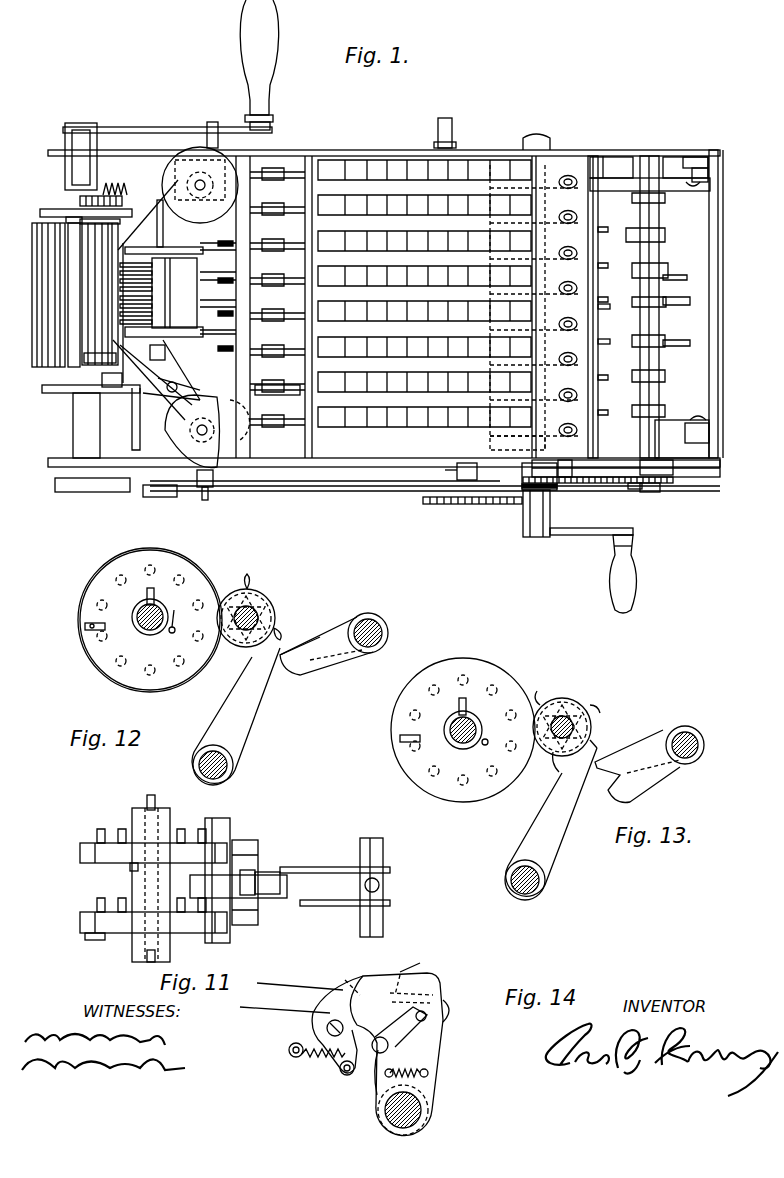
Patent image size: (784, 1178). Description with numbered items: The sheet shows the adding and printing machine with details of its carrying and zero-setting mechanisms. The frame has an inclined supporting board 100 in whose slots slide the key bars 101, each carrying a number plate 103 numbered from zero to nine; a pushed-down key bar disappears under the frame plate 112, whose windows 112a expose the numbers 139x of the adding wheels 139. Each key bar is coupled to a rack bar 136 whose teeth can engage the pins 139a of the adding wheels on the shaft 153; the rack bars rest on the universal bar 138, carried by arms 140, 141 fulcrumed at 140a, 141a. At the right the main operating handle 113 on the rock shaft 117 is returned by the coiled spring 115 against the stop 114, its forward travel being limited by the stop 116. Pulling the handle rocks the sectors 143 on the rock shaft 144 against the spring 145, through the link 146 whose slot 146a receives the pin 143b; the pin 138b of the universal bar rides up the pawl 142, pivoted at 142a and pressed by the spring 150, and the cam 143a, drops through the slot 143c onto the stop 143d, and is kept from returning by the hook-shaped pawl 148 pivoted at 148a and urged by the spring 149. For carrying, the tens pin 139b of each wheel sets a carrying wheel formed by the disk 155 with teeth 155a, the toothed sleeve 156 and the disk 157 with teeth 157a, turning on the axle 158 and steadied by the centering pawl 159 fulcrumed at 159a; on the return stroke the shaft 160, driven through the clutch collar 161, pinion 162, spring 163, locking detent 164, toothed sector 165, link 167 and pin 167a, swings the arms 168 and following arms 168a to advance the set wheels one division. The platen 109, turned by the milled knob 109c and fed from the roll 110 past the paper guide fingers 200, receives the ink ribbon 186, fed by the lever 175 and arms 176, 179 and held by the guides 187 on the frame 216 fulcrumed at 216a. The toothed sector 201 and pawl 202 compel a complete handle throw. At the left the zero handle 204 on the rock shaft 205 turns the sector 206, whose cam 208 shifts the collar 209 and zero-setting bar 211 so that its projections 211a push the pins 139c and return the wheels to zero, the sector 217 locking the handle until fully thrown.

In FIG. 1, the supporting board 100 is at (350, 307).
In FIG. 1, the key bar 101 is at (320, 160).
In FIG. 1, the number plate 103 is at (352, 160).
In FIG. 1, the platen 109 is at (90, 228).
In FIG. 1, the milled knob 109c is at (76, 204).
In FIG. 1, the paper roll 110 is at (40, 323).
In FIG. 1, the frame plate 112 is at (540, 157).
In FIG. 1, the windows 112a is at (492, 438).
In FIG. 1, the main operating handle 113 is at (274, 126).
In FIG. 1, the stop 114 is at (208, 122).
In FIG. 1, the coiled spring 115 is at (115, 167).
In FIG. 1, the stop 116 is at (452, 124).
In FIG. 1, the rock shaft 117 is at (73, 428).
In FIG. 1, the rack bar 136 is at (292, 390).
In FIG. 12, the universal bar 138 is at (90, 582).
In FIG. 14, the transverse pin 138b is at (427, 1012).
In FIG. 12, the adding wheel 139 is at (135, 685).
In FIG. 13, the adding wheel 139 is at (450, 665).
In FIG. 11, the adding wheel 139 is at (80, 860).
In FIG. 12, the pins 139a is at (118, 664).
In FIG. 13, the pins 139a is at (462, 785).
In FIG. 11, the pins 139a is at (97, 835).
In FIG. 12, the tens pin 139b is at (85, 628).
In FIG. 13, the tens pin 139b is at (410, 738).
In FIG. 11, the tens pin 139b is at (85, 938).
In FIG. 12, the pin 139c is at (187, 609).
In FIG. 13, the pin 139c is at (412, 740).
In FIG. 11, the pin 139c is at (130, 868).
In FIG. 1, the numbers 139x is at (570, 180).
In FIG. 1, the arm 140 is at (670, 170).
In FIG. 1, the fulcrum 140a is at (700, 186).
In FIG. 1, the arm 141 is at (673, 425).
In FIG. 1, the fulcrum 141a is at (703, 420).
In FIG. 14, the pawl 142 is at (405, 1035).
In FIG. 14, the fulcrum 142a is at (377, 1045).
In FIG. 14, the sector 143 is at (443, 1035).
In FIG. 14, the cam 143a is at (441, 990).
In FIG. 14, the transverse pin 143b is at (355, 974).
In FIG. 14, the slot 143c is at (396, 972).
In FIG. 14, the stop 143d is at (345, 1075).
In FIG. 14, the rock shaft 144 is at (422, 1116).
In FIG. 1, the spring 145 is at (122, 184).
In FIG. 14, the link 146 is at (287, 990).
In FIG. 14, the longitudinal slot 146a is at (412, 965).
In FIG. 14, the hook-shaped pawl 148 is at (313, 1020).
In FIG. 14, the pivot 148a is at (289, 1051).
In FIG. 14, the spring 149 is at (315, 1060).
In FIG. 14, the spring 150 is at (430, 1078).
In FIG. 12, the shaft 153 is at (146, 630).
In FIG. 13, the shaft 153 is at (460, 742).
In FIG. 11, the shaft 153 is at (133, 810).
In FIG. 1, the disk 155 is at (605, 345).
In FIG. 11, the disk 155 is at (262, 868).
In FIG. 13, the teeth 155a is at (565, 700).
In FIG. 1, the toothed sleeve 156 is at (600, 312).
In FIG. 12, the toothed sleeve 156 is at (262, 626).
In FIG. 13, the toothed sleeve 156 is at (555, 705).
In FIG. 11, the toothed sleeve 156 is at (270, 874).
In FIG. 1, the disk 157 is at (609, 307).
In FIG. 13, the disk 157 is at (590, 762).
In FIG. 11, the disk 157 is at (258, 912).
In FIG. 12, the teeth 157a is at (250, 588).
In FIG. 13, the teeth 157a is at (548, 762).
In FIG. 12, the axle 158 is at (258, 608).
In FIG. 13, the axle 158 is at (572, 720).
In FIG. 12, the centering pawl 159 is at (236, 715).
In FIG. 13, the centering pawl 159 is at (551, 822).
In FIG. 11, the centering pawl 159 is at (288, 887).
In FIG. 12, the fulcrum 159a is at (234, 762).
In FIG. 13, the fulcrum 159a is at (505, 872).
In FIG. 11, the fulcrum 159a is at (228, 820).
In FIG. 1, the shaft 160 is at (658, 212).
In FIG. 12, the shaft 160 is at (388, 630).
In FIG. 13, the shaft 160 is at (705, 748).
In FIG. 11, the shaft 160 is at (383, 850).
In FIG. 1, the collar 161 is at (626, 467).
In FIG. 1, the pinion 162 is at (675, 481).
In FIG. 1, the spring 163 is at (655, 492).
In FIG. 1, the locking detent 164 is at (675, 465).
In FIG. 1, the toothed sector 165 is at (572, 478).
In FIG. 1, the link 167 is at (355, 481).
In FIG. 1, the pin 167a is at (633, 490).
In FIG. 1, the arm 168 is at (690, 300).
In FIG. 12, the arm 168 is at (318, 637).
In FIG. 13, the arm 168 is at (636, 745).
In FIG. 11, the arm 168 is at (320, 866).
In FIG. 1, the following arm 168a is at (668, 347).
In FIG. 12, the following arm 168a is at (320, 678).
In FIG. 13, the following arm 168a is at (653, 776).
In FIG. 11, the following arm 168a is at (330, 907).
In FIG. 1, the lever 175 is at (208, 497).
In FIG. 1, the arm 176 is at (200, 475).
In FIG. 1, the arm 179 is at (112, 388).
In FIG. 1, the ribbon 186 is at (150, 400).
In FIG. 1, the ribbon guides 187 is at (165, 352).
In FIG. 1, the paper guide fingers 200 is at (113, 350).
In FIG. 1, the toothed sector 201 is at (125, 475).
In FIG. 1, the pawl 202 is at (165, 475).
In FIG. 1, the zero handle 204 is at (645, 560).
In FIG. 1, the rock shaft 205 is at (540, 538).
In FIG. 1, the sector 206 is at (450, 506).
In FIG. 1, the cam 208 is at (423, 500).
In FIG. 1, the collar 209 is at (550, 490).
In FIG. 11, the zero-setting bar 211 is at (155, 802).
In FIG. 12, the projections 211a is at (152, 590).
In FIG. 13, the projections 211a is at (467, 706).
In FIG. 11, the projections 211a is at (147, 950).
In FIG. 1, the frame 216 is at (170, 247).
In FIG. 1, the fulcrum 216a is at (185, 370).
In FIG. 1, the sector 217 is at (500, 457).